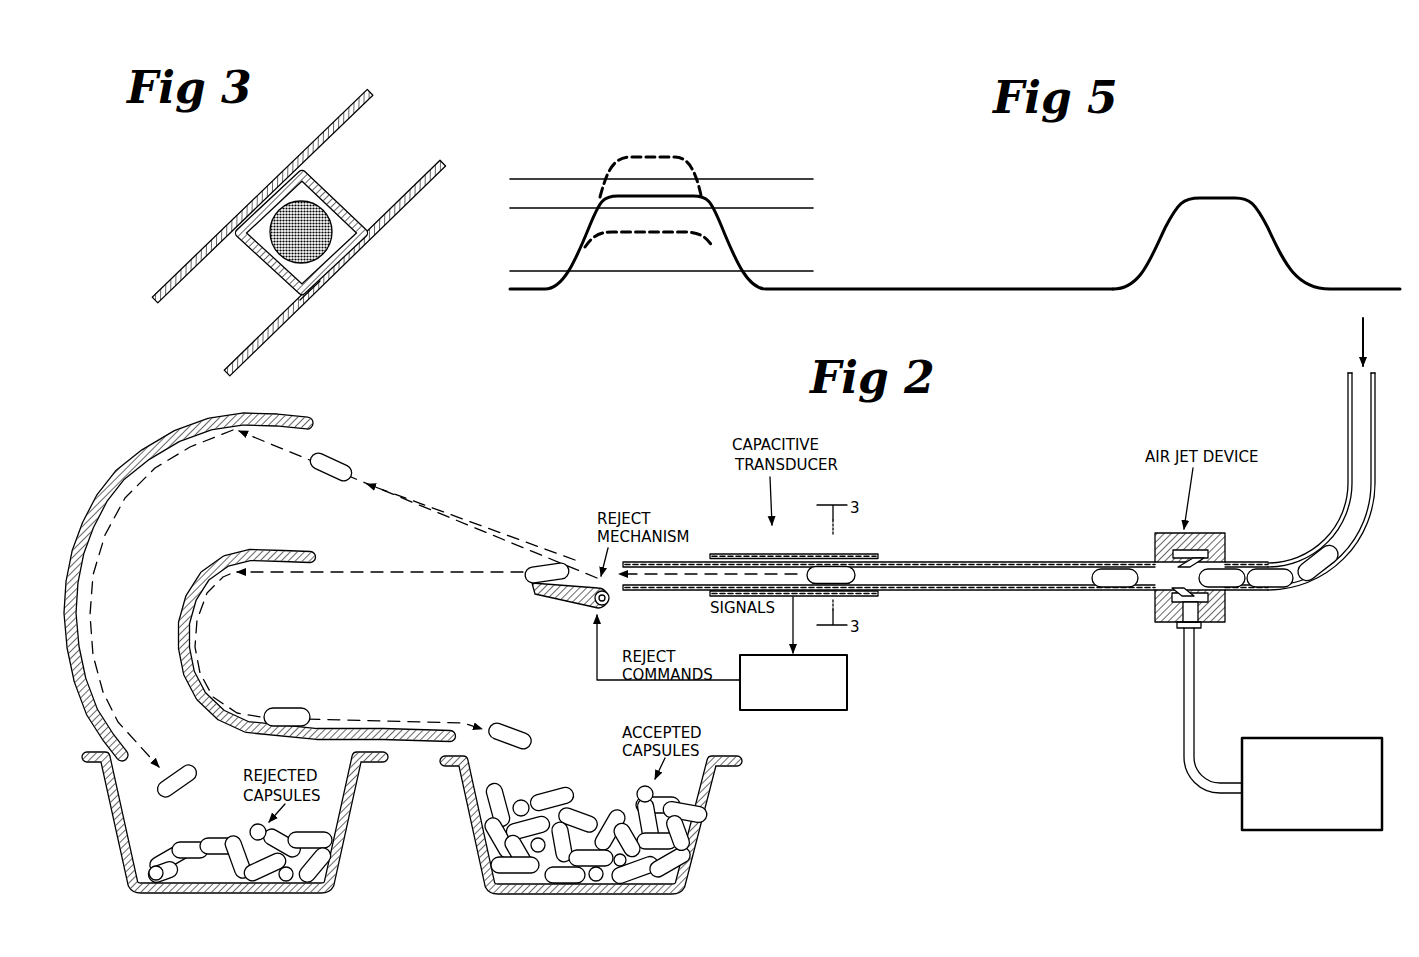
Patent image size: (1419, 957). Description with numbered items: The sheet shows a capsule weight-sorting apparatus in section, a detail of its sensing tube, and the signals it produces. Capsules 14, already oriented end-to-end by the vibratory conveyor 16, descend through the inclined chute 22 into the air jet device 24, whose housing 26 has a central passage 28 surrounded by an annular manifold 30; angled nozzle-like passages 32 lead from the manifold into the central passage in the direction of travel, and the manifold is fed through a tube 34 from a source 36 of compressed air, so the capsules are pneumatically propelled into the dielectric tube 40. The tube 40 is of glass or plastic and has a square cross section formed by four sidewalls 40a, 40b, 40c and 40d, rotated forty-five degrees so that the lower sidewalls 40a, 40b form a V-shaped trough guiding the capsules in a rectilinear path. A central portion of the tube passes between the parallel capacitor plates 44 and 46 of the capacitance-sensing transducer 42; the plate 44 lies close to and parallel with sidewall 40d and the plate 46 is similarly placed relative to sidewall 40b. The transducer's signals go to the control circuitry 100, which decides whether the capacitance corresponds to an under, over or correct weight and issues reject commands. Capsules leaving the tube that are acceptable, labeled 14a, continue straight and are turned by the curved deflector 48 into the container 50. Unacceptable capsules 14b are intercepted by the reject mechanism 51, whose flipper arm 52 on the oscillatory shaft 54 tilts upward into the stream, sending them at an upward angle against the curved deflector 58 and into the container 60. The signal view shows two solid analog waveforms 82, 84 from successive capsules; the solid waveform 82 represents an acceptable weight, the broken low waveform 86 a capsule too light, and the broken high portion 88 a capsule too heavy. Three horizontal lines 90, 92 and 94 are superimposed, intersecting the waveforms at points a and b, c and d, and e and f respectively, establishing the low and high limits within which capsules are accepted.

In FIG. 3, the capsules 14 is at (257, 242).
In FIG. 2, the capsules 14 is at (1267, 576).
In FIG. 2, the acceptable capsules 14a is at (527, 578).
In FIG. 2, the rejected capsules 14b is at (345, 460).
In FIG. 2, the vibratory conveyor 16 is at (1360, 333).
In FIG. 2, the chute 22 is at (1348, 405).
In FIG. 2, the air jet device 24 is at (1156, 527).
In FIG. 2, the housing 26 is at (1226, 608).
In FIG. 2, the central passage 28 is at (1155, 610).
In FIG. 2, the annular manifold 30 is at (1206, 535).
In FIG. 2, the angled nozzle-like passages 32 is at (1173, 563).
In FIG. 2, the tube 34 is at (1182, 736).
In FIG. 2, the source of compressed air 36 is at (1302, 738).
In FIG. 3, the dielectric tube 40 is at (342, 197).
In FIG. 2, the dielectric tube 40 is at (965, 563).
In FIG. 3, the sidewall 40a is at (282, 275).
In FIG. 3, the sidewall 40b is at (348, 260).
In FIG. 3, the sidewall 40c is at (317, 183).
In FIG. 3, the sidewall 40d is at (267, 197).
In FIG. 3, the capacitance-sensing transducer 42 is at (289, 336).
In FIG. 2, the capacitance-sensing transducer 42 is at (875, 548).
In FIG. 3, the capacitor plate 44 is at (175, 277).
In FIG. 2, the capacitor plate 44 is at (723, 554).
In FIG. 3, the capacitor plate 46 is at (313, 293).
In FIG. 2, the capacitor plate 46 is at (870, 597).
In FIG. 2, the curved deflector 48 is at (183, 603).
In FIG. 2, the container 50 is at (707, 850).
In FIG. 2, the reject mechanism 51 is at (547, 609).
In FIG. 2, the flipper arm 52 is at (537, 590).
In FIG. 2, the oscillatory shaft 54 is at (597, 608).
In FIG. 2, the curved deflector 58 is at (145, 448).
In FIG. 2, the container 60 is at (355, 837).
In FIG. 5, the analog voltage signal 82 is at (700, 197).
In FIG. 5, the analog voltage signal 84 is at (1233, 196).
In FIG. 5, the low waveform 86 is at (635, 237).
In FIG. 5, the high waveform 88 is at (655, 155).
In FIG. 5, the horizontal line 90 is at (813, 271).
In FIG. 5, the horizontal line 92 is at (813, 208).
In FIG. 5, the horizontal line 94 is at (813, 179).
In FIG. 2, the control circuitry 100 is at (825, 710).
In FIG. 5, the intersection point a is at (575, 270).
In FIG. 5, the intersection point b is at (727, 270).
In FIG. 5, the intersection point c is at (598, 208).
In FIG. 5, the intersection point d is at (703, 208).
In FIG. 5, the intersection point e is at (608, 178).
In FIG. 5, the intersection point f is at (700, 178).